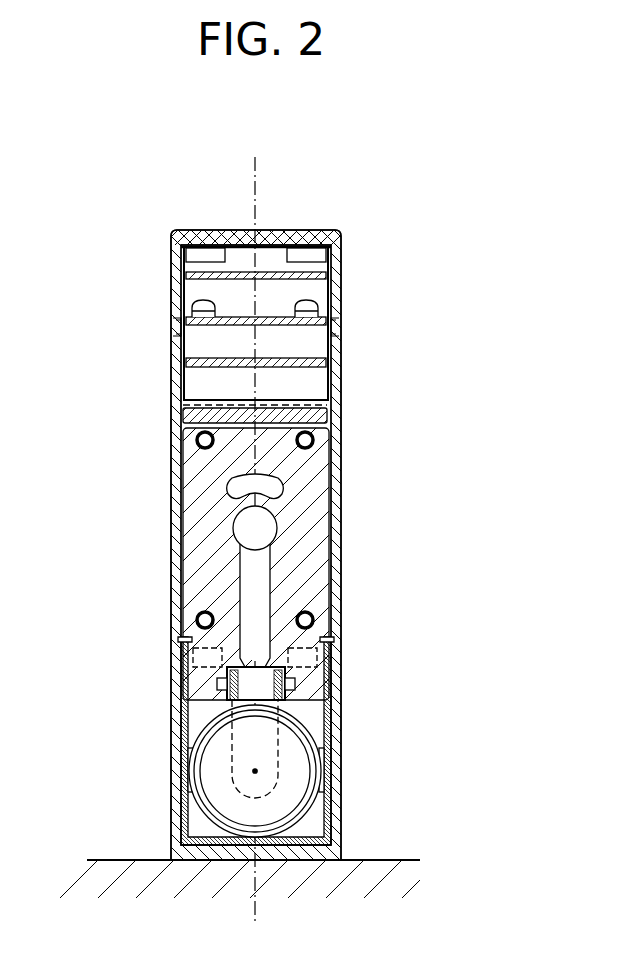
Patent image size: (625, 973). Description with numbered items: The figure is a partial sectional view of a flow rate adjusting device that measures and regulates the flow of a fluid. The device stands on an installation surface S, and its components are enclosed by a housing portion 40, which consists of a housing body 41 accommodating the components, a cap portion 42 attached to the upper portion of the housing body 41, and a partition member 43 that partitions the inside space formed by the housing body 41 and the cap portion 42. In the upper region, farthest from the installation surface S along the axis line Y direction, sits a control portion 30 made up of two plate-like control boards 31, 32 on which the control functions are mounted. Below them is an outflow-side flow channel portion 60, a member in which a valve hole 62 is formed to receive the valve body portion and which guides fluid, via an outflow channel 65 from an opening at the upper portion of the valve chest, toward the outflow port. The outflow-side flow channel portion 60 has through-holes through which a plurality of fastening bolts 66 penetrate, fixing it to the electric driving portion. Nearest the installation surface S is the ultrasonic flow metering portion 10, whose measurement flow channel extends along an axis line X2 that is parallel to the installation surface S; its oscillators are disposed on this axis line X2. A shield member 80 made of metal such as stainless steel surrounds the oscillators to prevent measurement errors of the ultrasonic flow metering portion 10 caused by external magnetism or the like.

The ultrasonic flow metering portion 10 is at (315, 724).
The control portion 30 is at (408, 300).
The control board 31 is at (330, 317).
The control board 32 is at (330, 361).
The housing portion 40 is at (80, 287).
The housing body 41 is at (171, 437).
The cap portion 42 is at (171, 308).
The partition member 43 is at (237, 407).
The outflow-side flow channel portion 60 is at (341, 467).
The valve hole 62 is at (277, 530).
The outflow channel 65 is at (283, 490).
The fastening bolts 66 is at (198, 446).
The shield member 80 is at (331, 814).
The axis line X2 is at (255, 771).
The axis line Y is at (257, 185).
The installation surface S is at (103, 858).